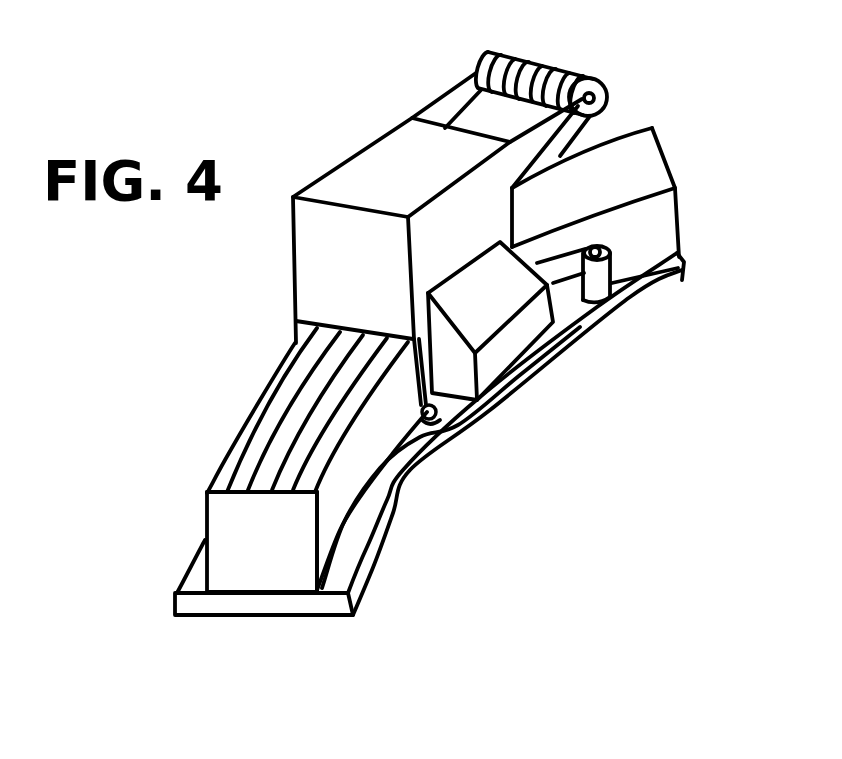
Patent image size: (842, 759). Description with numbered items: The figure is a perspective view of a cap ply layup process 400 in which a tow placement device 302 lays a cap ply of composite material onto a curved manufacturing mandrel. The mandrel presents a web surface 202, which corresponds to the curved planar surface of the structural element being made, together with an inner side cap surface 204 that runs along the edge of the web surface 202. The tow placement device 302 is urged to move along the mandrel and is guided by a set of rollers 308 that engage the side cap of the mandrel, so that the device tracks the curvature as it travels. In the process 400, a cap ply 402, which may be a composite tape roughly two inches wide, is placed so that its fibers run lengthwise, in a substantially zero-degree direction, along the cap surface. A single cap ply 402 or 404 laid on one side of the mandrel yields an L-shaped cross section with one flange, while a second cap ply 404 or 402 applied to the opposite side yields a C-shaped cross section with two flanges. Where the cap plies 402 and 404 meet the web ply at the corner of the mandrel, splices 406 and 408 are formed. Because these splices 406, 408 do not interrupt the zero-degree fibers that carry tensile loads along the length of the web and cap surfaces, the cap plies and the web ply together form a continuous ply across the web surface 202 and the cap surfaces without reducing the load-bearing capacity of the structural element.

The cap ply layup process 400 is at (196, 294).
The tow placement device 302 is at (377, 155).
The web surface 202 is at (652, 162).
The inner side cap surface 204 is at (657, 223).
The rollers 308 is at (450, 424).
The cap ply 402 is at (332, 485).
The second cap ply 404 is at (192, 545).
The splice 406 is at (305, 507).
The splice 408 is at (207, 492).